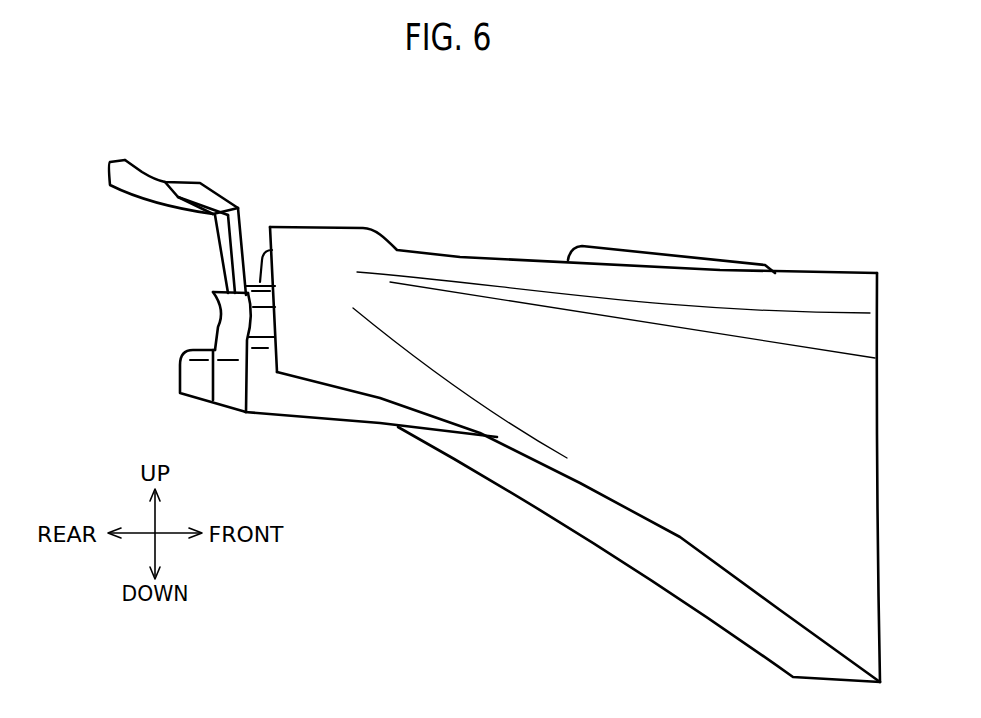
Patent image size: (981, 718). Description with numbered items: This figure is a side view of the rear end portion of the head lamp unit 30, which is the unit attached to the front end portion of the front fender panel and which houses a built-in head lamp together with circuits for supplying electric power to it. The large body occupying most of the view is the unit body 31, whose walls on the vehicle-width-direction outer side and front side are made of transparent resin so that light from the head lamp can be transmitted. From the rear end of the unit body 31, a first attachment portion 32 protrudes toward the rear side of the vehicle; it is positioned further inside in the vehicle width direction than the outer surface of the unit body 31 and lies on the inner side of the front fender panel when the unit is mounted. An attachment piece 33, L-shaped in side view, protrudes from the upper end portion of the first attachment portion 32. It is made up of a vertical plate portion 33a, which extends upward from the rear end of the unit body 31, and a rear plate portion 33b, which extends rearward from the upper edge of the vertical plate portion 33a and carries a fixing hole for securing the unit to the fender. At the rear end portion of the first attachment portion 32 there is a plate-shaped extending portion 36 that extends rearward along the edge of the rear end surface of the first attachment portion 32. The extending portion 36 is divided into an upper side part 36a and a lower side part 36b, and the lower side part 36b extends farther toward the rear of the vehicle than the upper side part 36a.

The head lamp unit 30 is at (727, 211).
The unit body 31 is at (517, 266).
The first attachment portion 32 is at (310, 418).
The attachment piece 33 is at (163, 121).
The vertical plate portion 33a is at (245, 228).
The rear plate portion 33b is at (173, 181).
The extending portion 36 is at (97, 318).
The upper side part 36a is at (230, 318).
The lower side part 36b is at (187, 373).